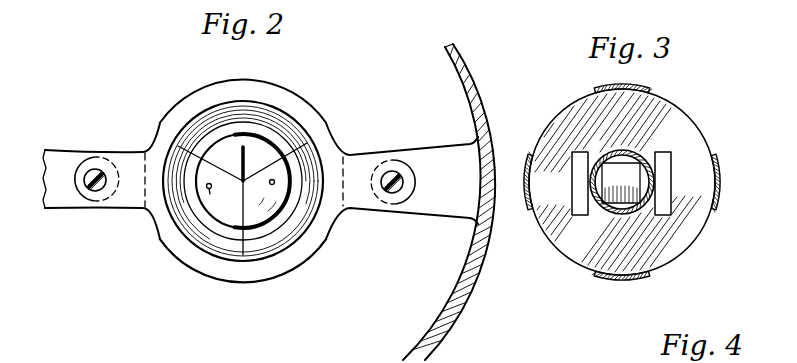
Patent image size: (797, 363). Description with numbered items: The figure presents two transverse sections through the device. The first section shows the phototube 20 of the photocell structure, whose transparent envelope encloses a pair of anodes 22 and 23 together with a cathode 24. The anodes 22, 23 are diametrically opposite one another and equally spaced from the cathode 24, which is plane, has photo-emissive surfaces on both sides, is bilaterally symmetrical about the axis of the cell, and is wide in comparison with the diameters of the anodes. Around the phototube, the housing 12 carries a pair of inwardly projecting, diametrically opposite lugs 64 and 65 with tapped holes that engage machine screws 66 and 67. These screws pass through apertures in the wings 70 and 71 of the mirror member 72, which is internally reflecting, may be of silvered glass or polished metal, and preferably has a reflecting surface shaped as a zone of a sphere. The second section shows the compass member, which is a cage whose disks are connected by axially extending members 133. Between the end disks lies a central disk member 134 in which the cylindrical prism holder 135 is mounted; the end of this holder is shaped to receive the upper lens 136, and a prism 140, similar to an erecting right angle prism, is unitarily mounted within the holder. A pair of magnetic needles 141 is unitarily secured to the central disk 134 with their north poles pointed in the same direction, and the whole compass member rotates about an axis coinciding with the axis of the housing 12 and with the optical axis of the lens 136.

In FIG. 2, the housing 12 is at (465, 80).
In FIG. 2, the phototube 20 is at (218, 222).
In FIG. 2, the anode 22 is at (219, 194).
In FIG. 2, the anode 23 is at (263, 185).
In FIG. 2, the cathode 24 is at (230, 161).
In FIG. 2, the lug 64 is at (62, 200).
In FIG. 2, the lug 65 is at (433, 160).
In FIG. 2, the machine screw 66 is at (98, 188).
In FIG. 2, the machine screw 67 is at (392, 180).
In FIG. 2, the wing 70 is at (123, 162).
In FIG. 2, the wing 71 is at (362, 202).
In FIG. 2, the mirror member 72 is at (285, 279).
In FIG. 3, the axially extending members 133 is at (637, 92).
In FIG. 3, the central disk member 134 is at (682, 245).
In FIG. 3, the cylindrical prism holder 135 is at (637, 217).
In FIG. 3, the upper lens 136 is at (607, 212).
In FIG. 3, the prism 140 is at (607, 160).
In FIG. 3, the magnetic needles 141 is at (580, 152).